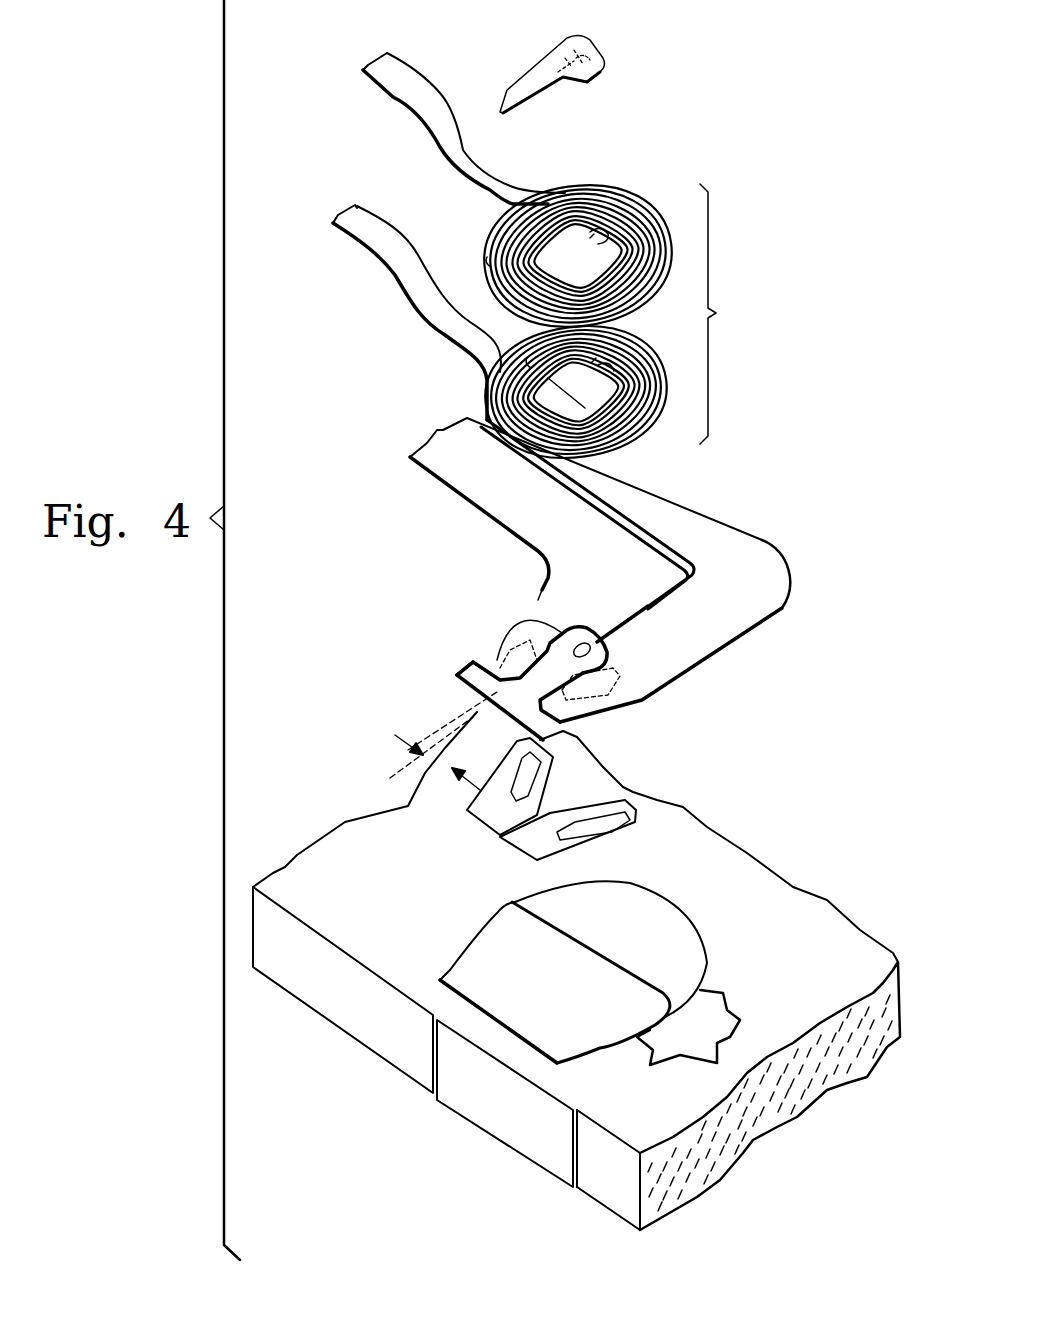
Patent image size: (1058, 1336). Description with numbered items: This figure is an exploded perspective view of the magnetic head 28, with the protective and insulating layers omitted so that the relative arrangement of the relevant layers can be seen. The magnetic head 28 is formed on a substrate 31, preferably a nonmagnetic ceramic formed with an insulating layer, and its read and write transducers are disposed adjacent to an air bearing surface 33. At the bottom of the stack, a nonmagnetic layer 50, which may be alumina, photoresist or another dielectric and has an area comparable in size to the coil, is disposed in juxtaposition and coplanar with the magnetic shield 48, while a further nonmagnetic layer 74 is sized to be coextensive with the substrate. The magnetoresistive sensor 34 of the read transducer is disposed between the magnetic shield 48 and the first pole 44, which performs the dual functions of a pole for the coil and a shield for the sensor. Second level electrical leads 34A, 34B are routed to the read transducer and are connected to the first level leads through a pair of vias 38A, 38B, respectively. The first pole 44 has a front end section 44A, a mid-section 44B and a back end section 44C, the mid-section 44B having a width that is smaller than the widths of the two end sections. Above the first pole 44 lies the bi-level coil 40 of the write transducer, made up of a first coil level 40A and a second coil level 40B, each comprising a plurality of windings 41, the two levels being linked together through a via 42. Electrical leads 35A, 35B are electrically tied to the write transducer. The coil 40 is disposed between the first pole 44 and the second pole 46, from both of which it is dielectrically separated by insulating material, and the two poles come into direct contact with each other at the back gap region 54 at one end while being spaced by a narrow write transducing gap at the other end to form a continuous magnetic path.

The magnetic head 28 is at (712, 124).
The substrate 31 is at (815, 987).
The air bearing surface 33 is at (470, 1093).
The magnetoresistive sensor 34 is at (490, 838).
The electrical lead 34A is at (452, 492).
The electrical lead 34B is at (748, 625).
The electrical lead 35A is at (392, 97).
The electrical lead 35B is at (363, 250).
The via 38A is at (527, 762).
The via 38B is at (604, 812).
The bi-level coil 40 is at (619, 309).
The first coil level 40A is at (652, 355).
The second coil level 40B is at (637, 190).
The windings 41 is at (487, 258).
The via 42 is at (590, 238).
The first pole 44 is at (468, 684).
The front end section 44A is at (468, 670).
The mid-section 44B is at (512, 650).
The back end section 44C is at (548, 612).
The second pole 46 is at (541, 66).
The magnetic shield 48 is at (605, 1050).
The nonmagnetic layer 50 is at (697, 913).
The back gap region 54 is at (580, 60).
The nonmagnetic layer 74 is at (718, 1020).